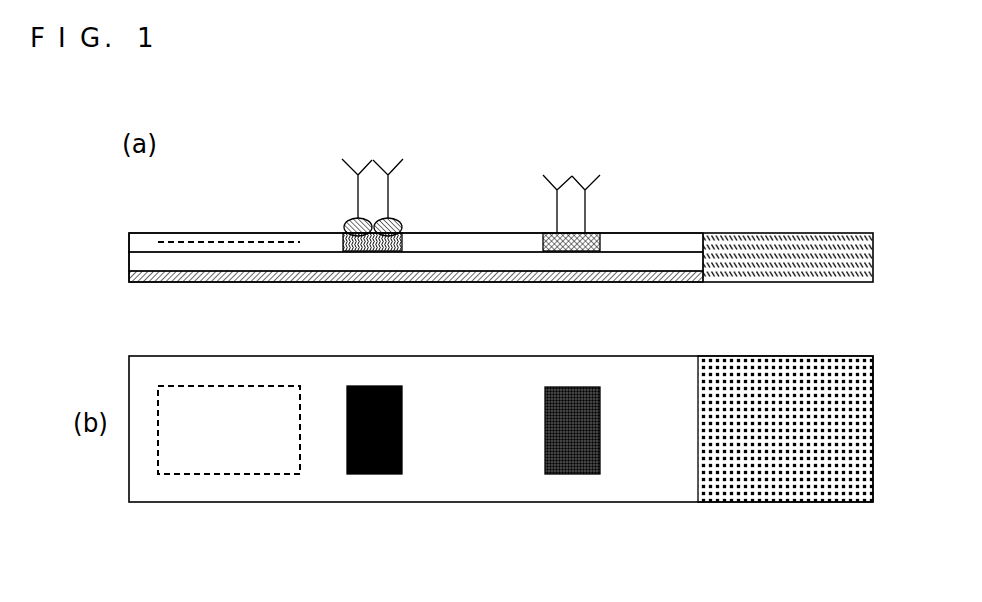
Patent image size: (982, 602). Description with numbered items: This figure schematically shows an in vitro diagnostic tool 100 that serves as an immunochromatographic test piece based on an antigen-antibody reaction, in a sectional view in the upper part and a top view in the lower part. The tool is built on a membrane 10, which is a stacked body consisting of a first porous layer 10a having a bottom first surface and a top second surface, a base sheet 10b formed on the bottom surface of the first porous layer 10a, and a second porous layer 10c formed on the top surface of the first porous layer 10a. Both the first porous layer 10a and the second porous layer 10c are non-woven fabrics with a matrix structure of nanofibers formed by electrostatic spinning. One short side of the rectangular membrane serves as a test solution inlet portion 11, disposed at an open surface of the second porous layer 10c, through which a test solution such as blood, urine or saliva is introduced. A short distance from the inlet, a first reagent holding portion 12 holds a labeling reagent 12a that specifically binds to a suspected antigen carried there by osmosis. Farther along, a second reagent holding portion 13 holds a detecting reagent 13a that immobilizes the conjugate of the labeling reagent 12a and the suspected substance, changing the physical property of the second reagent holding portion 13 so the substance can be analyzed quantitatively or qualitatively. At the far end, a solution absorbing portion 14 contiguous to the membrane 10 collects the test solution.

The in vitro diagnostic tool 100 is at (350, 80).
The membrane 10 is at (544, 315).
The first porous layer 10a is at (413, 259).
The base sheet 10b is at (462, 272).
The second porous layer 10c is at (508, 246).
The test solution inlet portion 11 is at (200, 238).
The first reagent holding portion 12 is at (403, 237).
The labeling reagent 12a is at (330, 158).
The second reagent holding portion 13 is at (548, 237).
The detecting reagent 13a is at (613, 173).
The solution absorbing portion 14 is at (783, 250).